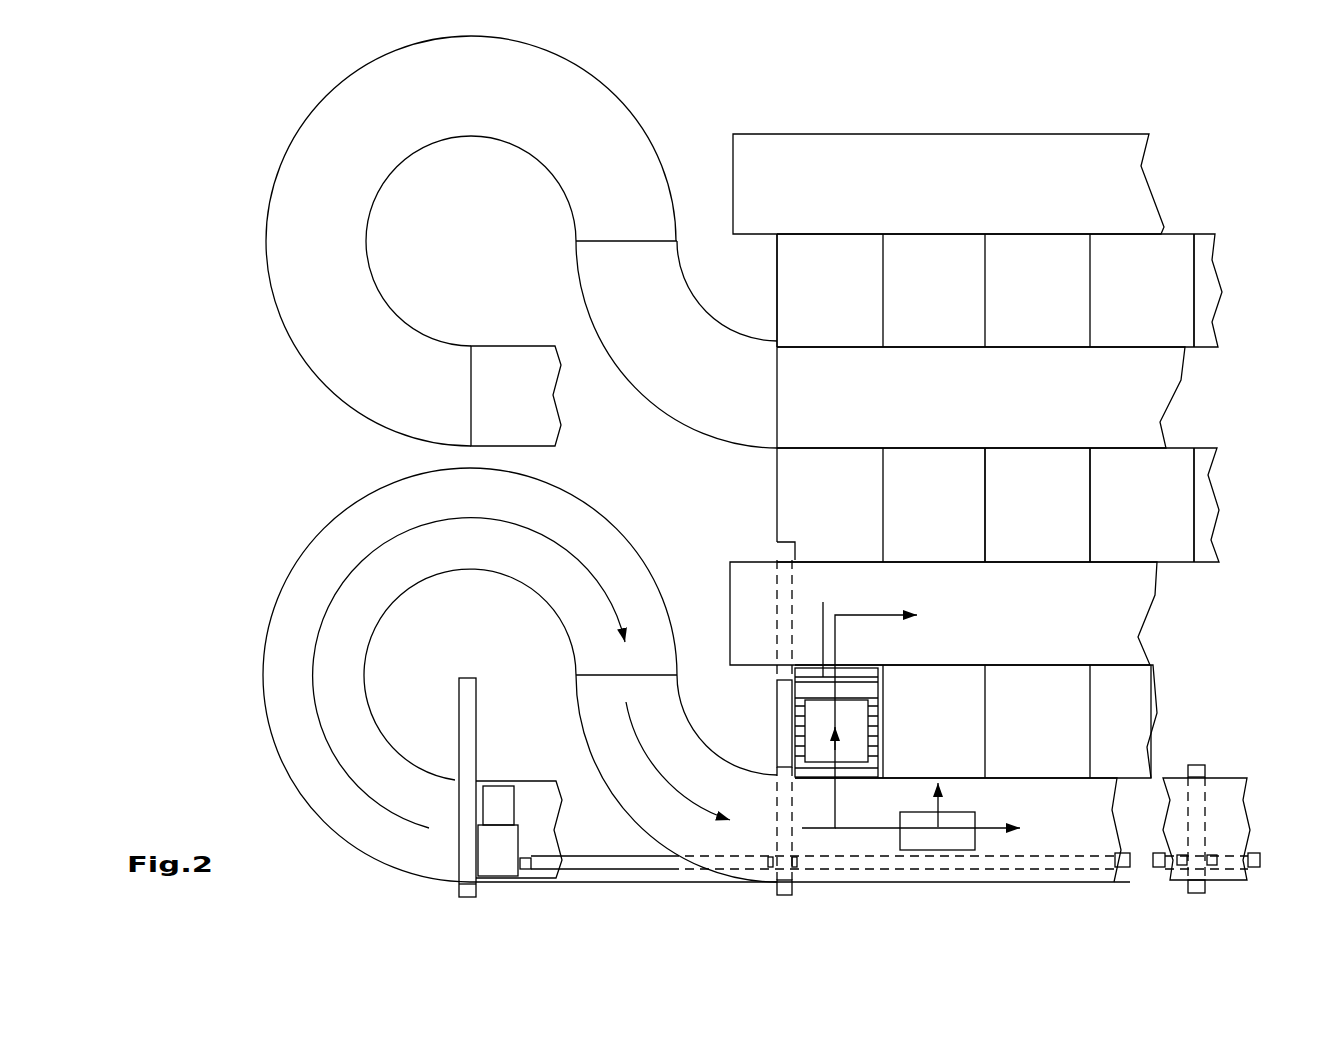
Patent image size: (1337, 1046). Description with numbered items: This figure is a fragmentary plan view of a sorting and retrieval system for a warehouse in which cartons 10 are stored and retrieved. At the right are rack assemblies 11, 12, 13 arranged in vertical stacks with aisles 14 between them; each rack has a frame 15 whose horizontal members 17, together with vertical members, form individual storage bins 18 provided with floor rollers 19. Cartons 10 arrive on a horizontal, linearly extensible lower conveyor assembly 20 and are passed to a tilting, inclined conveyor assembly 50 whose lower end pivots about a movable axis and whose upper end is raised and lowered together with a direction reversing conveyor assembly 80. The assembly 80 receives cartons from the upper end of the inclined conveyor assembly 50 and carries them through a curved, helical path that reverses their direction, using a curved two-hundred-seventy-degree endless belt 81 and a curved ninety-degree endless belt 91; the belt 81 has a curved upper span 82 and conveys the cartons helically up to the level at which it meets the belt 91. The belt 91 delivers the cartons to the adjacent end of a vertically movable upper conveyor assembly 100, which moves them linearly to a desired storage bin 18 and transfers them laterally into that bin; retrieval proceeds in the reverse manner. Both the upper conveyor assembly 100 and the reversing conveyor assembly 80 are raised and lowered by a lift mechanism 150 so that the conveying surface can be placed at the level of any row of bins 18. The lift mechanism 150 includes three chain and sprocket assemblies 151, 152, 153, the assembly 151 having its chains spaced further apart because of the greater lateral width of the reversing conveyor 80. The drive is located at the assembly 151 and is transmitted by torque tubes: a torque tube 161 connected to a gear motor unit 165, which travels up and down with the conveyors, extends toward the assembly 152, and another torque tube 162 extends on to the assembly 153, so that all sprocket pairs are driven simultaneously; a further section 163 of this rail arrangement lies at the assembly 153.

The cartons 10 is at (913, 714).
The rack assembly 11 is at (1185, 224).
The rack assembly 12 is at (1196, 440).
The rack assembly 13 is at (1150, 660).
The aisles 14 is at (1201, 381).
The frame 15 is at (778, 293).
The horizontal members 17 is at (1027, 452).
The storage bins 18 is at (852, 680).
The floor rollers 19 is at (823, 677).
The lower conveyor assembly 20 is at (1237, 793).
The inclined conveyor assembly 50 is at (502, 402).
The direction reversing conveyor assembly 80 is at (667, 469).
The curved 270° endless belt 81 is at (299, 696).
The curved upper span 82 is at (303, 335).
The curved 90° endless belt 91 is at (614, 119).
The upper conveyor assembly 100 is at (918, 192).
The lift mechanism 150 is at (864, 728).
The chain and sprocket assembly 151 is at (454, 713).
The chain and sprocket assembly 152 is at (793, 897).
The chain and sprocket assembly 153 is at (1213, 887).
The torque tube 161 is at (668, 870).
The torque tube 162 is at (1130, 868).
The third rail segment 163 is at (1250, 848).
The gear motor unit 165 is at (498, 805).